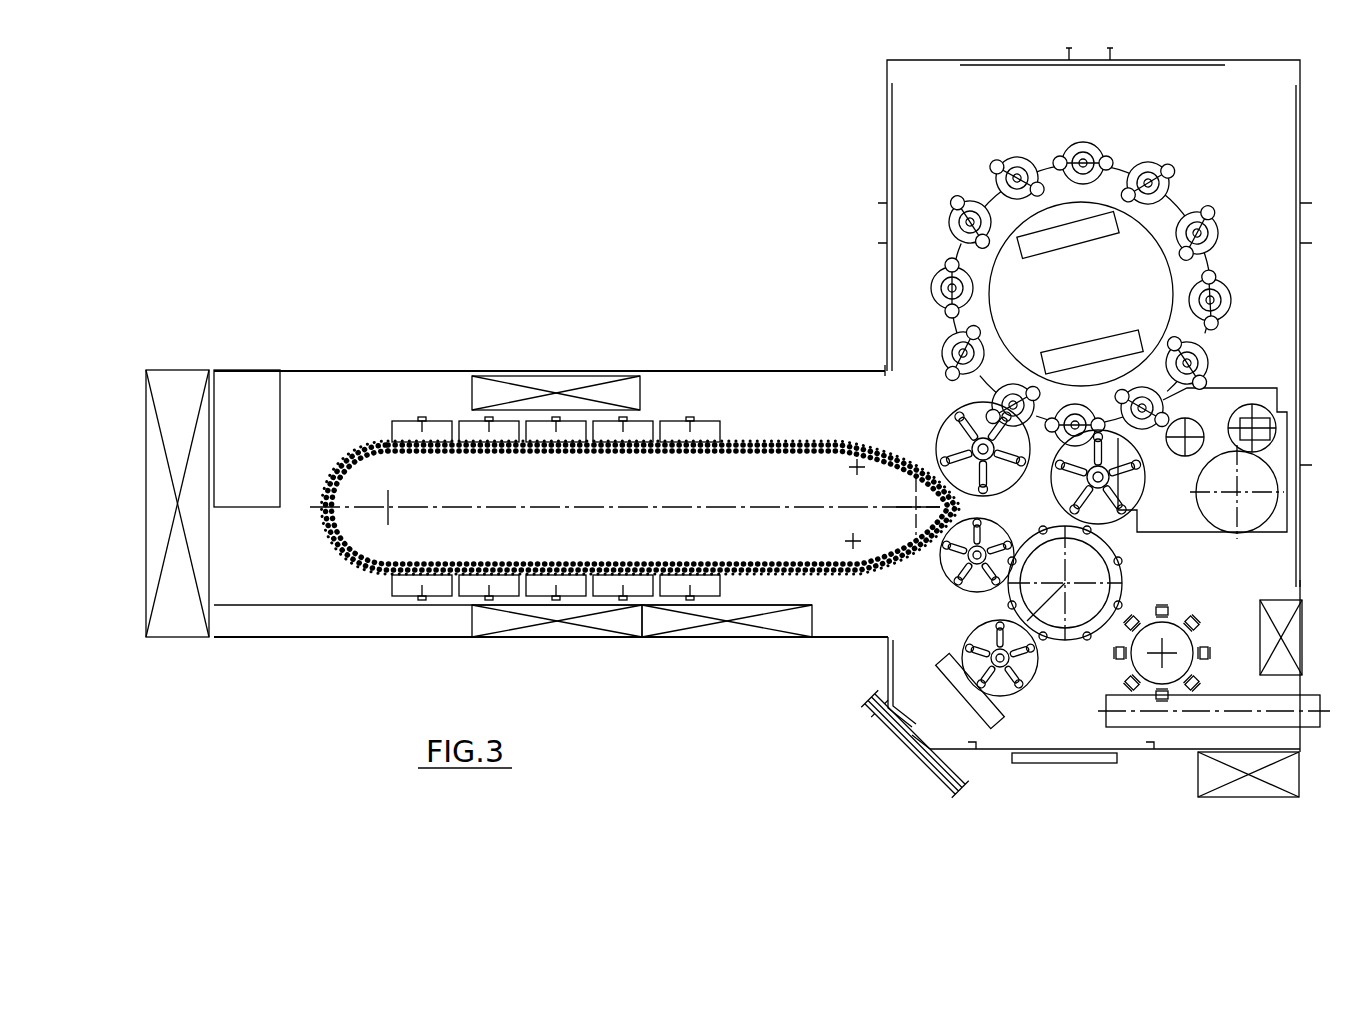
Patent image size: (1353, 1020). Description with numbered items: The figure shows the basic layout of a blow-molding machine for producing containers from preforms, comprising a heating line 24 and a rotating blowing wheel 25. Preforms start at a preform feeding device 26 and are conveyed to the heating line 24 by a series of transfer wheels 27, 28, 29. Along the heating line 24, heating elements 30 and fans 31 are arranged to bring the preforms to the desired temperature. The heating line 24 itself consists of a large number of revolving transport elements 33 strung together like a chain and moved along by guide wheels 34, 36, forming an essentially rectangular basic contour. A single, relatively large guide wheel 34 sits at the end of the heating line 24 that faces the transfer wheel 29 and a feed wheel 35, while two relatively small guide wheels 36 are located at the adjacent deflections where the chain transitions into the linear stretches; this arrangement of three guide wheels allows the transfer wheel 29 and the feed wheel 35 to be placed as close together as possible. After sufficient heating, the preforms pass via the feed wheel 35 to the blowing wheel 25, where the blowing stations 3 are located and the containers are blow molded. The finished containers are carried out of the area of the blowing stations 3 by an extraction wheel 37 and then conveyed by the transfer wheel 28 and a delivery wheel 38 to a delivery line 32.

The blowing station 3 is at (932, 276).
The heating line 24 is at (683, 395).
The blowing wheel 25 is at (990, 200).
The preform feeding device 26 is at (915, 745).
The transfer wheel 27 is at (1010, 695).
The transfer wheel 28 is at (1068, 640).
The transfer wheel 29 is at (893, 668).
The heating element 30 is at (437, 421).
The fan 31 is at (555, 376).
The delivery line 32 is at (1308, 718).
The transport element 33 is at (360, 567).
The guide wheel 34 is at (392, 512).
The feed wheel 35 is at (960, 400).
The guide wheel 36 is at (857, 467).
The extraction wheel 37 is at (1145, 495).
The delivery wheel 38 is at (1172, 665).